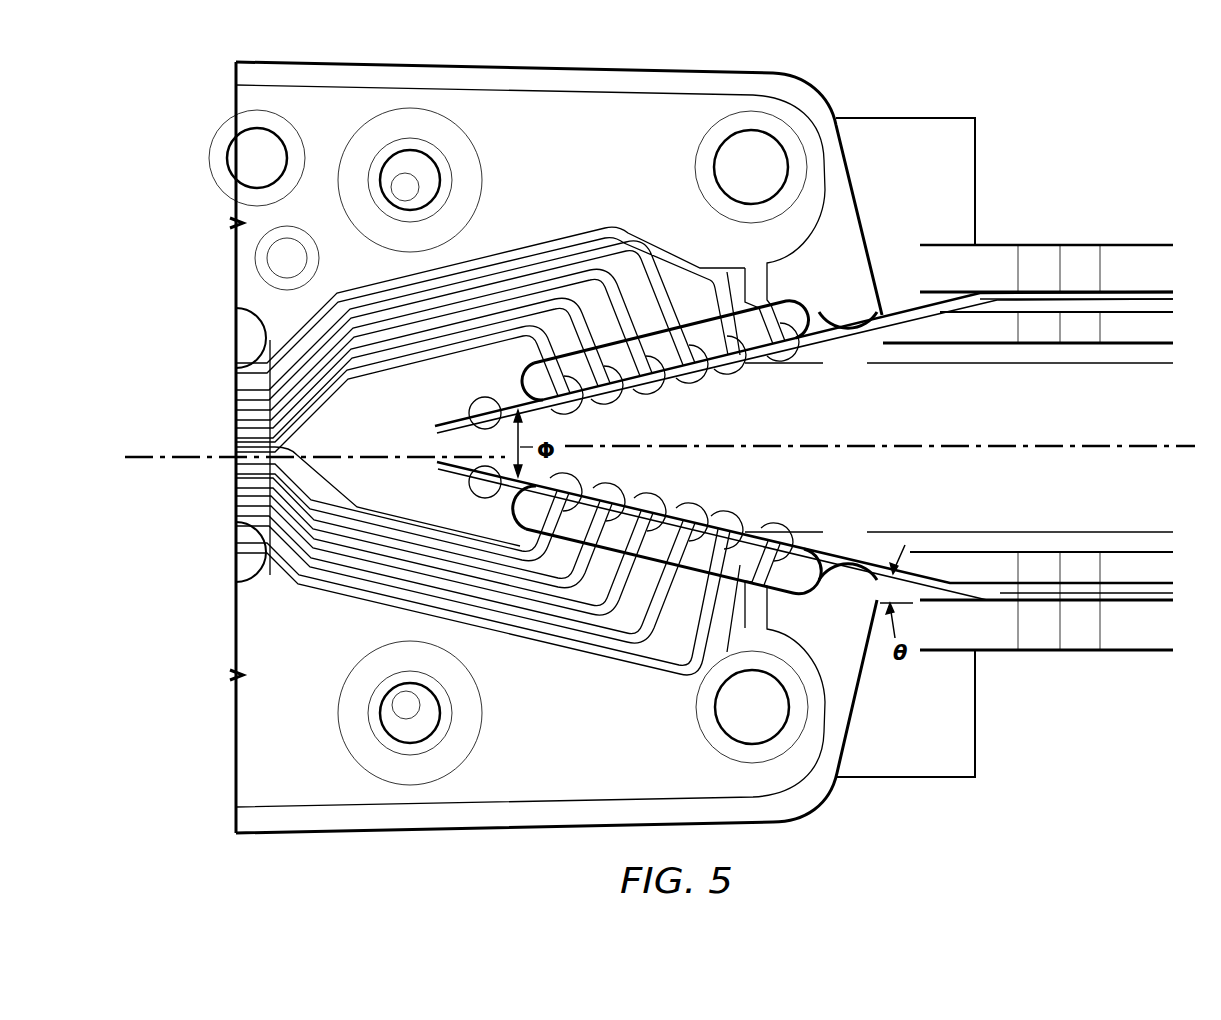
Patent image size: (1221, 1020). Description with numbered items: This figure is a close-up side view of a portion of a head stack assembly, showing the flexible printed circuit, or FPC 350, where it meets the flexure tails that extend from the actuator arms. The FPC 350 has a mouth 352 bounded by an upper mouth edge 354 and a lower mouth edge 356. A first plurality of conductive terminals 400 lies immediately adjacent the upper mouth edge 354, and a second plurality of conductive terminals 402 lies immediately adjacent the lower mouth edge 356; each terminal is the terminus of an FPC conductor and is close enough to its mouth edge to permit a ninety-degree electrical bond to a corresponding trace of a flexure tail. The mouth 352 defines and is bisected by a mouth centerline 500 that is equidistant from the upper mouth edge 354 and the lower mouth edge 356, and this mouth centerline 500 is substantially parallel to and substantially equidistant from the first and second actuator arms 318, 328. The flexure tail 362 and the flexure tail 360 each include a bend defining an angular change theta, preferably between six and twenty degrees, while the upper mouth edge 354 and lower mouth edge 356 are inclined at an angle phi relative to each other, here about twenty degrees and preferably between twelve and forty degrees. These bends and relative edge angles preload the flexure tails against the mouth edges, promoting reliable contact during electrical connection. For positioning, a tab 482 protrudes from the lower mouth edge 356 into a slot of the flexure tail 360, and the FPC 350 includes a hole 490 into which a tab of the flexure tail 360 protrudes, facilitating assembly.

The first actuator arm 318 is at (1148, 243).
The second actuator arm 328 is at (1128, 652).
The FPC 350 is at (245, 733).
The mouth 352 is at (723, 441).
The upper mouth edge 354 is at (803, 312).
The lower mouth edge 356 is at (795, 560).
The flexure tail 360 is at (1083, 590).
The flexure tail 362 is at (1040, 305).
The first plurality of conductive terminals 400 is at (600, 402).
The second plurality of conductive terminals 402 is at (600, 500).
The tab 482 is at (856, 530).
The hole 490 is at (470, 496).
The mouth centerline 500 is at (1186, 446).